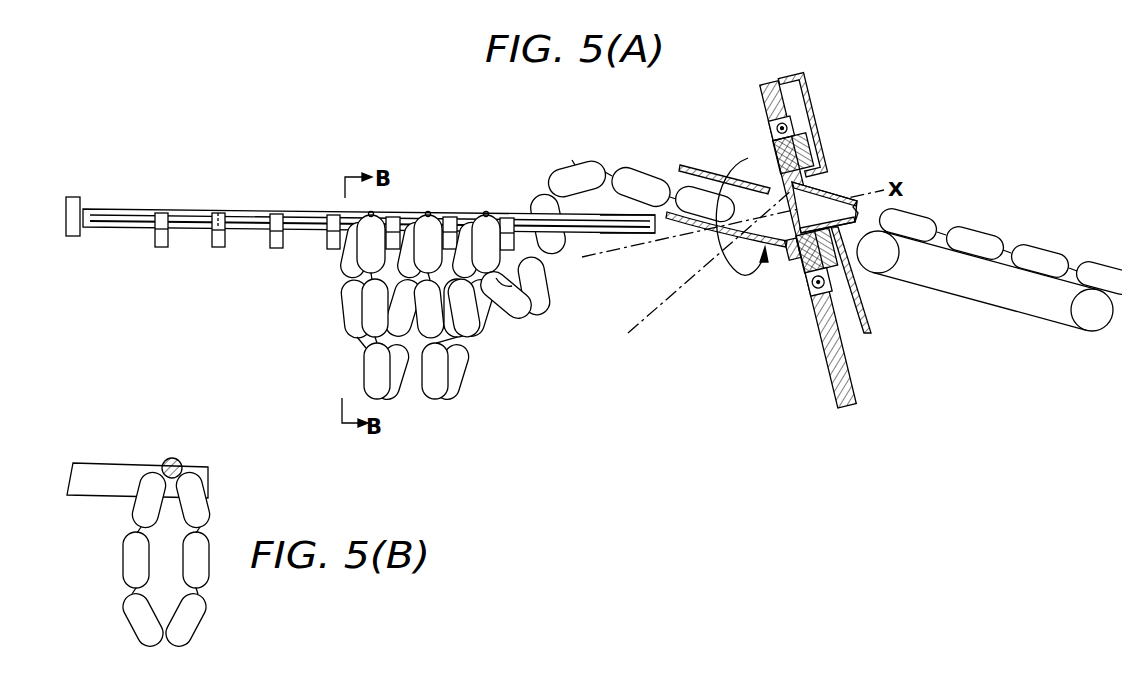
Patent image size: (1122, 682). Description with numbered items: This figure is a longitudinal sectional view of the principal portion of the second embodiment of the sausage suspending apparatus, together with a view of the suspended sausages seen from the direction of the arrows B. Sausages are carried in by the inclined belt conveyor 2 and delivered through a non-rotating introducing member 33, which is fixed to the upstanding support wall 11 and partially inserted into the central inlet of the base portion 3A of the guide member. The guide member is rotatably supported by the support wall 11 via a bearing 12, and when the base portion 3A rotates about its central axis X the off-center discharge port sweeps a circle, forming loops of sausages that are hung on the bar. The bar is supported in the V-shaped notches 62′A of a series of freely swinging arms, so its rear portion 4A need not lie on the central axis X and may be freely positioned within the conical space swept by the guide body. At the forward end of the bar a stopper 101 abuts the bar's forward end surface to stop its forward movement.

The stopper 101 is at (73, 198).
The V-shaped notch 62′A is at (218, 224).
The rear portion of bar 4A is at (646, 228).
The introducing member 33 is at (806, 106).
The base portion 3A is at (790, 154).
The bearing 12 is at (807, 284).
The support wall 11 is at (832, 374).
The belt conveyor 2 is at (1005, 268).